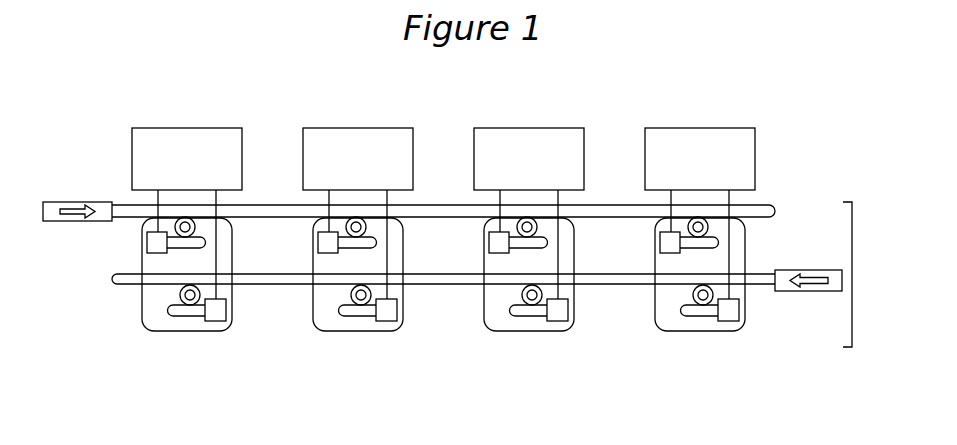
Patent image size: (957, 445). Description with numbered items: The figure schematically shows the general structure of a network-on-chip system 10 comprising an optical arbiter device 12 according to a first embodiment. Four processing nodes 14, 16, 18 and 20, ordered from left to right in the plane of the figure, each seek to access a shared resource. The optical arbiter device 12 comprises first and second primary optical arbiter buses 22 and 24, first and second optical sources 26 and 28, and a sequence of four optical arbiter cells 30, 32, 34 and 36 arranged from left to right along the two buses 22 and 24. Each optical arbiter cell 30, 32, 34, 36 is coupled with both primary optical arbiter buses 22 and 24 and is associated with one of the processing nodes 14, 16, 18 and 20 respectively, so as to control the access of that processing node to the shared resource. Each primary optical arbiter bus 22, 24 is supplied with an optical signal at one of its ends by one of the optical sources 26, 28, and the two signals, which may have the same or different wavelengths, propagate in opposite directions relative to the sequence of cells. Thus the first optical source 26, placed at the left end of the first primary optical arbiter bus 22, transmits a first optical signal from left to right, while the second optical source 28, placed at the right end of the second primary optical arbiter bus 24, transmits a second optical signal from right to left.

The network-on-chip system 10 is at (708, 78).
The optical arbiter device 12 is at (852, 275).
The processing node 14 is at (187, 213).
The processing node 16 is at (358, 213).
The processing node 18 is at (529, 213).
The processing node 20 is at (700, 213).
The first primary optical arbiter bus 22 is at (760, 204).
The second primary optical arbiter bus 24 is at (122, 287).
The first optical source 26 is at (65, 222).
The second optical source 28 is at (828, 293).
The optical arbiter cell 30 is at (141, 237).
The optical arbiter cell 32 is at (312, 237).
The optical arbiter cell 34 is at (483, 237).
The optical arbiter cell 36 is at (654, 237).